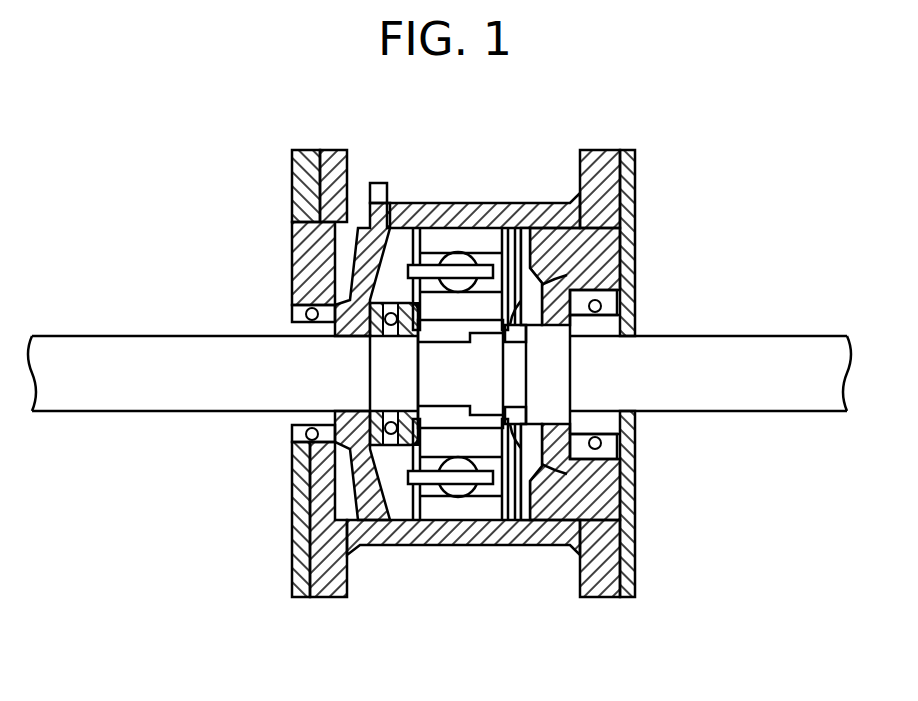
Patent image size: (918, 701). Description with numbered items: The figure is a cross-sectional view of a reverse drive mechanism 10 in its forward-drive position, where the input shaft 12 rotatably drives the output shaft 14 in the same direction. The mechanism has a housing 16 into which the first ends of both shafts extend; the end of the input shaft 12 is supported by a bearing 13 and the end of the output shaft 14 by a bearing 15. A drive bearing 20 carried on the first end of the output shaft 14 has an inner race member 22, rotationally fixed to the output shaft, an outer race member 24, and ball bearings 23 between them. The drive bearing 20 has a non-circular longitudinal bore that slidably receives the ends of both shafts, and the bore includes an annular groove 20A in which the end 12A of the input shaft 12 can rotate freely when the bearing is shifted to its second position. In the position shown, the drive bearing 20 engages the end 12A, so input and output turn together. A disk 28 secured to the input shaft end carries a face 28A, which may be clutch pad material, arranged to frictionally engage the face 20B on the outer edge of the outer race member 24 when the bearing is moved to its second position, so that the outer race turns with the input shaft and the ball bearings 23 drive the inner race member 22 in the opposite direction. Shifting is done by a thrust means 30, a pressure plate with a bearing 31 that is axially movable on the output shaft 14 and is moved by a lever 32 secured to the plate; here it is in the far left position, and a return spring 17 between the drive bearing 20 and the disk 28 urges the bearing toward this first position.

The reverse drive mechanism 10 is at (203, 148).
The input shaft 12 is at (776, 347).
The end of input shaft 12A is at (540, 393).
The bearing 13 is at (612, 310).
The output shaft 14 is at (116, 335).
The bearing 15 is at (302, 434).
The housing 16 is at (548, 192).
The return spring 17 is at (572, 283).
The drive bearing 20 is at (492, 525).
The annular groove 20A is at (492, 332).
The face 20B is at (512, 523).
The inner race member 22 is at (437, 449).
The ball bearings 23 is at (460, 252).
The outer race member 24 is at (430, 242).
The disk 28 is at (562, 255).
The face 28A is at (532, 523).
The thrust means 30 is at (378, 512).
The bearing 31 is at (358, 453).
The lever 32 is at (373, 182).